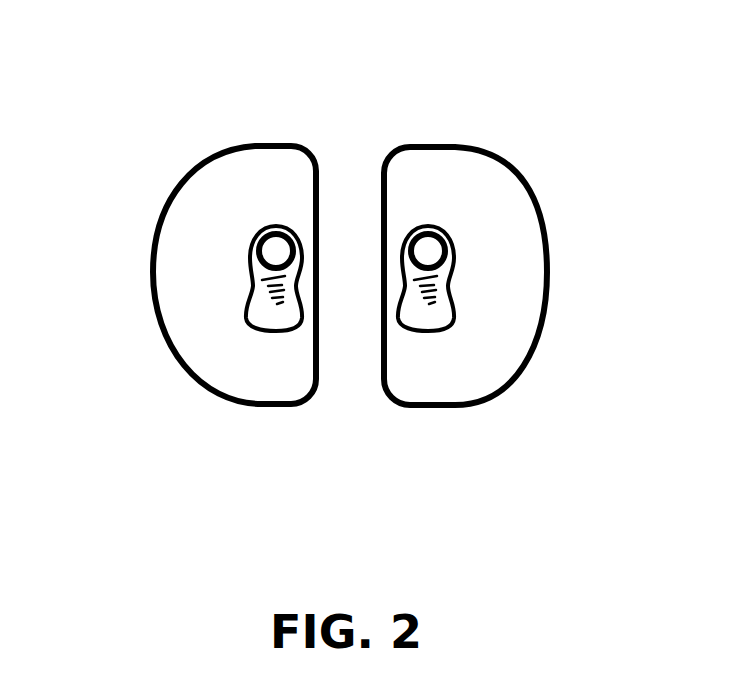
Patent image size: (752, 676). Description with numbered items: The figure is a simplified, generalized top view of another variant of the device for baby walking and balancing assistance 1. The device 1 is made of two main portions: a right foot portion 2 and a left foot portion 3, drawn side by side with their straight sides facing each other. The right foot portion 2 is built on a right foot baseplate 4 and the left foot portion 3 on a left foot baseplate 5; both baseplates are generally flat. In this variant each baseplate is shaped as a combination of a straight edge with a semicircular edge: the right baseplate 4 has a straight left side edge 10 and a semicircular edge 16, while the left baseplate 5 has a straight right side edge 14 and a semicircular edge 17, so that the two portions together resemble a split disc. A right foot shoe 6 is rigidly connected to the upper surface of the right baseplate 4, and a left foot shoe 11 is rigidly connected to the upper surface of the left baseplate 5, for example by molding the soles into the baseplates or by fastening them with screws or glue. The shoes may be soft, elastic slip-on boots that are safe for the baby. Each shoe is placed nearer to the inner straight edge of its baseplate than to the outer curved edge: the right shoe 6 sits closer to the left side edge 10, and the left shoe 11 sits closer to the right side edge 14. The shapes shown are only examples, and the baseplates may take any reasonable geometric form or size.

The device for baby walking and balancing assistance 1 is at (357, 68).
The right foot portion 2 is at (462, 116).
The left foot portion 3 is at (257, 134).
The right foot baseplate 4 is at (195, 348).
The left foot baseplate 5 is at (483, 187).
The right foot shoe 6 is at (274, 227).
The left side edge of the right baseplate 10 is at (323, 187).
The left foot shoe 11 is at (413, 227).
The right side edge of the left baseplate 14 is at (373, 370).
The semicircular edge of the right portion 16 is at (151, 272).
The semicircular edge of the left portion 17 is at (550, 265).